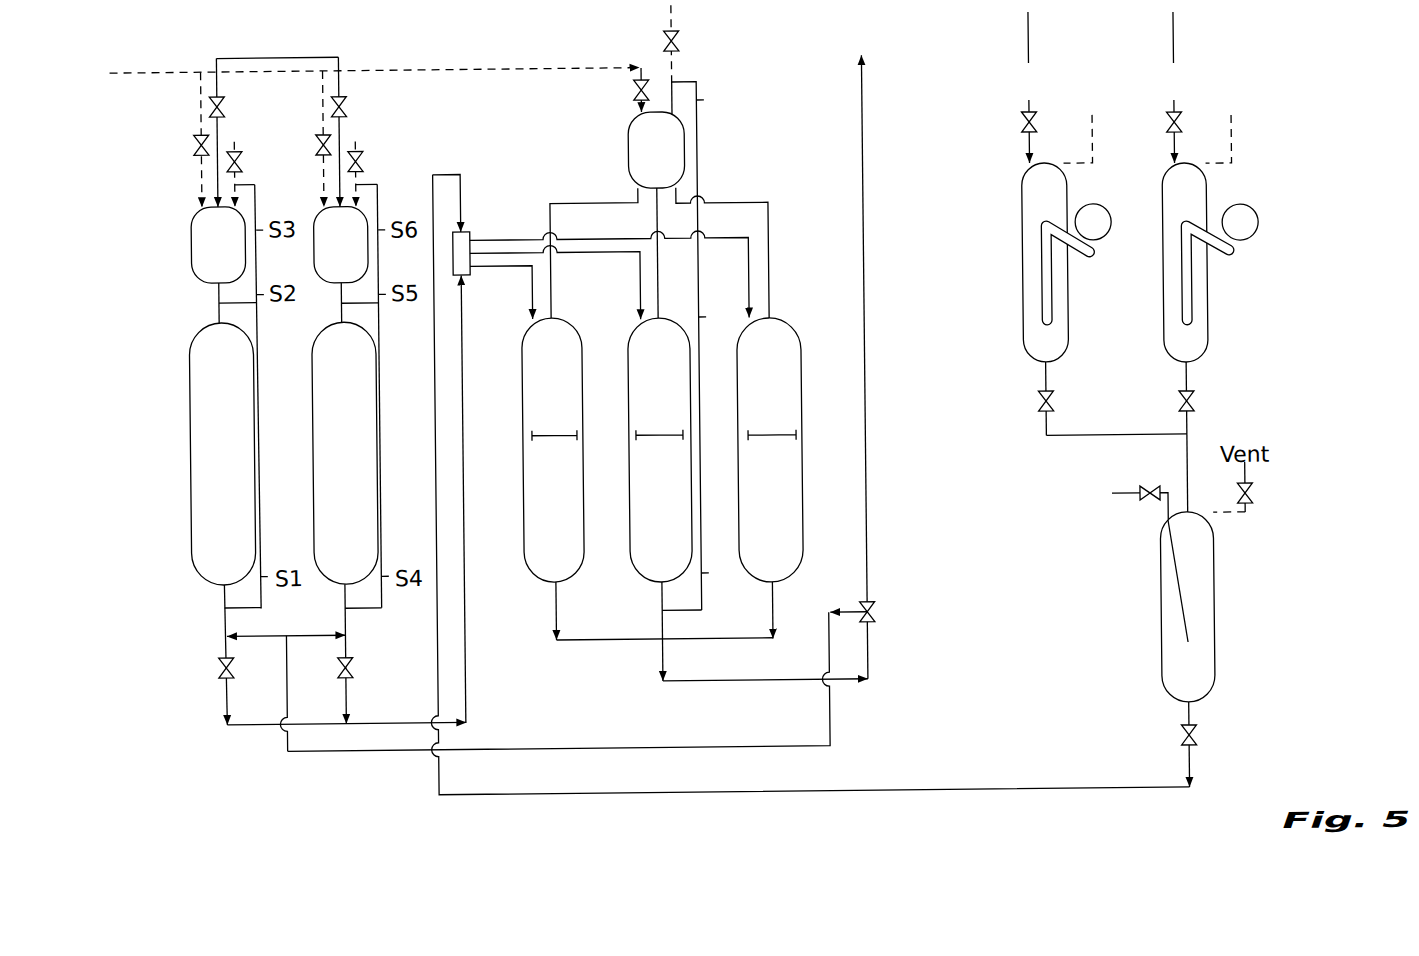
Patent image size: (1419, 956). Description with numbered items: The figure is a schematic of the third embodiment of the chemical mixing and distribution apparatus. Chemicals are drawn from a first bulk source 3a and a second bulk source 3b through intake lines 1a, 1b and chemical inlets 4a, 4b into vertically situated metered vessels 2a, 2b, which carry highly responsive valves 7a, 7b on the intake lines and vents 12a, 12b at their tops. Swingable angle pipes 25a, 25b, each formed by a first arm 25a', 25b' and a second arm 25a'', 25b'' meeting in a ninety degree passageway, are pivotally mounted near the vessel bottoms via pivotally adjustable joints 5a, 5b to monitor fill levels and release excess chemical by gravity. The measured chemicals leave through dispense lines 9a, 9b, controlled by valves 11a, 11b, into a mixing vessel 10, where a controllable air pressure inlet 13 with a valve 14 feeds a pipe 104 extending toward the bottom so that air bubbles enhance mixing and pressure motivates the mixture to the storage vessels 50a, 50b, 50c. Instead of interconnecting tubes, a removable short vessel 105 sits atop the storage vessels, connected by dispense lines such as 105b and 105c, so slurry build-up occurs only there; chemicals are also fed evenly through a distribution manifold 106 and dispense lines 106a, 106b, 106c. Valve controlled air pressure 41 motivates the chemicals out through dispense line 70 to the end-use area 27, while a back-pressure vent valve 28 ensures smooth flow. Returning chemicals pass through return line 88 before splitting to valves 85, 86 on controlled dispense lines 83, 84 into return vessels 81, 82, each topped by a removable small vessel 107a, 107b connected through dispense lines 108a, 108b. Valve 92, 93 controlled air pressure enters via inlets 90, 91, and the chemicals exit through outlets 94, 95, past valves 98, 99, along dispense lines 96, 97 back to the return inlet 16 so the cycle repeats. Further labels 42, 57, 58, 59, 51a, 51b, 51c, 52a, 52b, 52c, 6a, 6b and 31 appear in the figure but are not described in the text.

The return line 88 is at (283, 18).
The valve 85 is at (235, 132).
The valve 86 is at (356, 132).
The valve controlled air pressure 41 is at (374, 60).
The valve 42 is at (624, 90).
The valve 92 is at (196, 140).
The valve 93 is at (318, 141).
The inlet 90 is at (182, 180).
The inlet 91 is at (307, 180).
The controlled dispense line 83 is at (243, 161).
The controlled dispense line 84 is at (362, 160).
The removable small vessel 107a is at (190, 265).
The removable small vessel 107b is at (314, 264).
The dispense line 108a is at (215, 296).
The dispense line 108b is at (337, 297).
The return vessel 81 is at (206, 454).
The return vessel 82 is at (328, 453).
The outlet 94 is at (224, 608).
The outlet 95 is at (347, 607).
The valve 98 is at (211, 655).
The valve 99 is at (331, 654).
The dispense line 96 is at (326, 693).
The dispense line 97 is at (351, 711).
The return inlet 16 is at (794, 481).
The distribution manifold 106 is at (473, 226).
The dispense line 106a is at (501, 293).
The dispense line 106b is at (555, 283).
The dispense line 106c is at (753, 238).
The short vessel 105 is at (629, 149).
The dispense line 105b is at (664, 205).
The dispense line 105c is at (726, 247).
The back-pressure vent valve 28 is at (700, 60).
The line 59 is at (708, 345).
The line 58 is at (720, 317).
The line 57 is at (702, 586).
The end-use area 27 is at (859, 31).
The dispense line 70 is at (591, 403).
The storage vessel 50a is at (530, 450).
The storage vessel 50b is at (638, 450).
The storage vessel 50c is at (793, 449).
The level 51a is at (554, 451).
The level 51b is at (659, 451).
The level 51c is at (772, 452).
The outlet 52a is at (636, 611).
The outlet 52b is at (637, 631).
The outlet 52c is at (796, 609).
The first bulk source 3a is at (1037, 18).
The second bulk source 3b is at (1182, 19).
The intake line 1a is at (1009, 104).
The second intake line 1b is at (1154, 104).
The valve 7a is at (1012, 128).
The valve 7b is at (1158, 128).
The chemical inlet 4a is at (1007, 164).
The chemical inlet 4b is at (1151, 164).
The vent 12a is at (1078, 130).
The vent 12b is at (1218, 130).
The first metered vessel 2a is at (1068, 262).
The second metered vessel 2b is at (1214, 262).
The first arm 25a' is at (981, 279).
The swingable angle pipe 25a is at (1007, 278).
The pivotally adjustable joint 5a is at (1038, 326).
The second arm 25a'' is at (1103, 297).
The second arm 25b'' is at (1312, 237).
The first arm 25b' is at (1250, 288).
The swingable angle pipe 25b is at (1243, 286).
The pivotally adjustable joint 5b is at (1196, 328).
The outlet 6a is at (1024, 377).
The outlet 6b is at (1214, 376).
The valve 11a is at (1066, 398).
The valve 11b is at (1165, 399).
The dispense line 9a is at (1045, 429).
The dispense line 9b is at (1193, 430).
The valve 14 is at (1119, 491).
The controllable air pressure inlet 13 is at (1159, 520).
The pipe 104 is at (1176, 597).
The mixing vessel 10 is at (1158, 640).
The valve 31 is at (1207, 744).